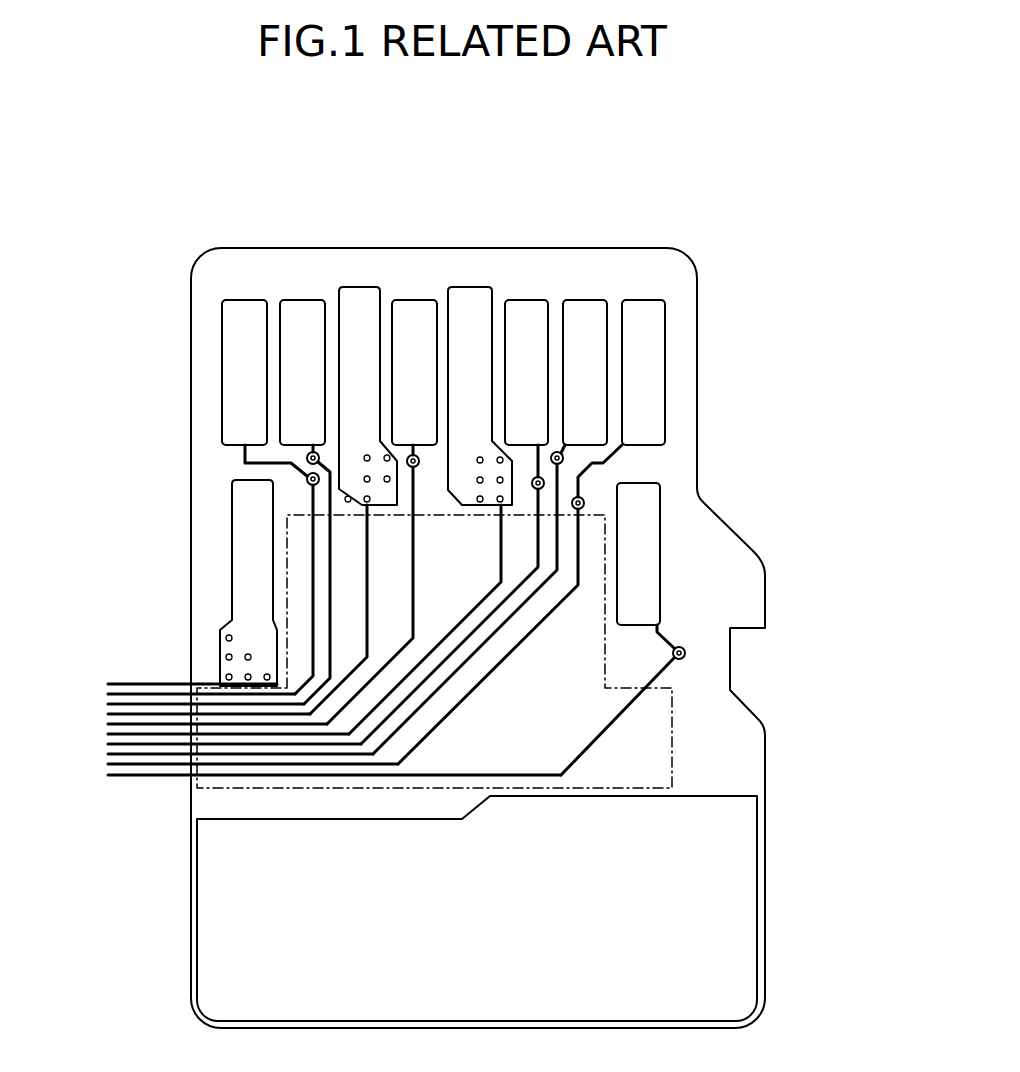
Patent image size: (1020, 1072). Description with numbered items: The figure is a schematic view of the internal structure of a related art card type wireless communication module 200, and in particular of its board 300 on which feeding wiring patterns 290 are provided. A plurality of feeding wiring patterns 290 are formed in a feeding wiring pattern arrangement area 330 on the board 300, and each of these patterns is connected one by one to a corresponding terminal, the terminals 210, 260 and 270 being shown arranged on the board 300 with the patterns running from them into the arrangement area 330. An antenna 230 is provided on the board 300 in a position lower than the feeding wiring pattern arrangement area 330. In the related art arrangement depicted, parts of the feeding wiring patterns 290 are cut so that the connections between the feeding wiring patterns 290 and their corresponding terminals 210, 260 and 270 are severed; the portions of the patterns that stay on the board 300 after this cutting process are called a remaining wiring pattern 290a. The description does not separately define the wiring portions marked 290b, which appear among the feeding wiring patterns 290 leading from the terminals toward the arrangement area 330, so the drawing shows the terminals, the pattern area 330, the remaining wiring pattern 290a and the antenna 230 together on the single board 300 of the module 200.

The card type wireless communication module 200 is at (498, 588).
The terminal 210 is at (665, 294).
The antenna 230 is at (728, 947).
The terminal 260 is at (232, 493).
The terminal 270 is at (643, 570).
The feeding wiring pattern 290 is at (100, 668).
The remaining wiring pattern 290a is at (622, 712).
The wiring lines 290b is at (368, 547).
The board 300 is at (712, 500).
The feeding wiring pattern arrangement area 330 is at (585, 645).